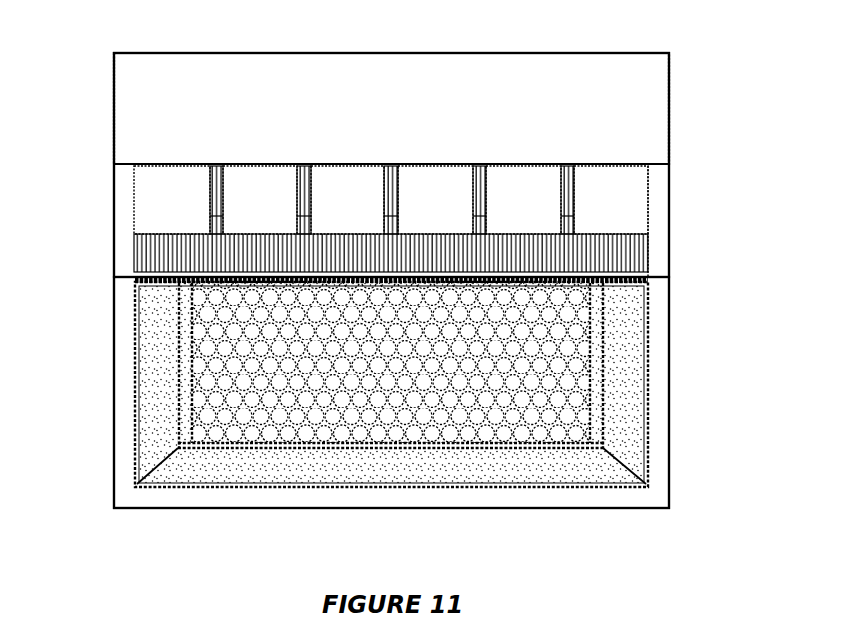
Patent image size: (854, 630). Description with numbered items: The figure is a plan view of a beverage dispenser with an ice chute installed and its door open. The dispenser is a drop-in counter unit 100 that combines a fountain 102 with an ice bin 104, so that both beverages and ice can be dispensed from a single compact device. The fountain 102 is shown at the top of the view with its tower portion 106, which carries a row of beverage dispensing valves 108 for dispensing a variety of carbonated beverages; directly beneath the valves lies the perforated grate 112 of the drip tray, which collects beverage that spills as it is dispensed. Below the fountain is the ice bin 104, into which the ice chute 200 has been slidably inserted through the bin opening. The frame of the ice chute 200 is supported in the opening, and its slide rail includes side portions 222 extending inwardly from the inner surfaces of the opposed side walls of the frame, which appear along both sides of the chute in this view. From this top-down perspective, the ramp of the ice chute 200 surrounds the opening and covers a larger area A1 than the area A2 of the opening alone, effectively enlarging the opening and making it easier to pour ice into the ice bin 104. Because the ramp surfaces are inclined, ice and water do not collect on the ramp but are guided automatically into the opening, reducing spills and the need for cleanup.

The drop-in counter unit 100 is at (343, 43).
The fountain 102 is at (112, 118).
The ice bin 104 is at (112, 465).
The tower portion 106 is at (660, 110).
The beverage dispensing valves 108 is at (183, 177).
The perforated grate 112 is at (647, 243).
The ice chute 200 is at (137, 338).
The side portions 222 is at (187, 378).
The area covered by the ramp A1 is at (237, 488).
The area of the opening A2 is at (342, 445).